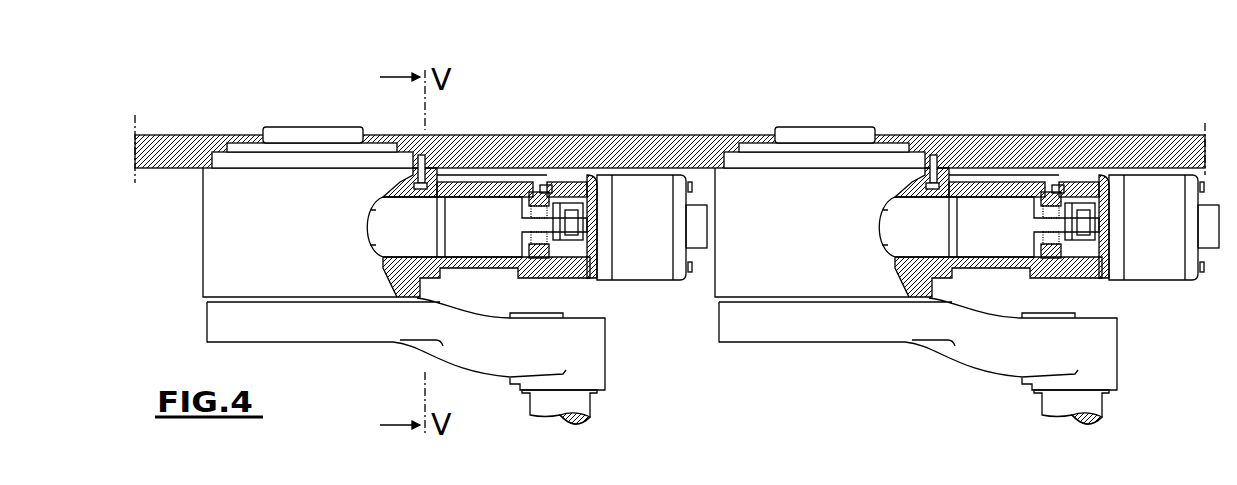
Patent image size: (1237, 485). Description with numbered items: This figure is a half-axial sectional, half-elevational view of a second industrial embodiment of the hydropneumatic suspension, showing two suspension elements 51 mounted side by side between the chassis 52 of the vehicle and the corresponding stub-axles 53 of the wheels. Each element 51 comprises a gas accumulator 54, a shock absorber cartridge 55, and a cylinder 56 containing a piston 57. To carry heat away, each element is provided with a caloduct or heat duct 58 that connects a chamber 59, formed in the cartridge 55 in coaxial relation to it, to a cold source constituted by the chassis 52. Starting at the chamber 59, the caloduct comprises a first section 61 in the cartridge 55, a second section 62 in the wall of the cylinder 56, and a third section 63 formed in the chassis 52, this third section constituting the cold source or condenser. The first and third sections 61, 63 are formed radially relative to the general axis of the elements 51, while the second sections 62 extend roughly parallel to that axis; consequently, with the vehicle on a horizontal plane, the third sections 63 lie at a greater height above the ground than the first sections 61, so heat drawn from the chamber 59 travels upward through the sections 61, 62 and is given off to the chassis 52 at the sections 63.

The suspension element 51 is at (597, 288).
The chassis 52 is at (633, 150).
The stub-axle 53 is at (583, 405).
The gas accumulator 54 is at (683, 281).
The shock absorber cartridge 55 is at (580, 190).
The cylinder 56 is at (489, 268).
The piston 57 is at (397, 242).
The caloduct 58 is at (499, 180).
The chamber 59 is at (542, 258).
The first section 61 is at (546, 187).
The second section 62 is at (464, 182).
The third section 63 is at (417, 182).